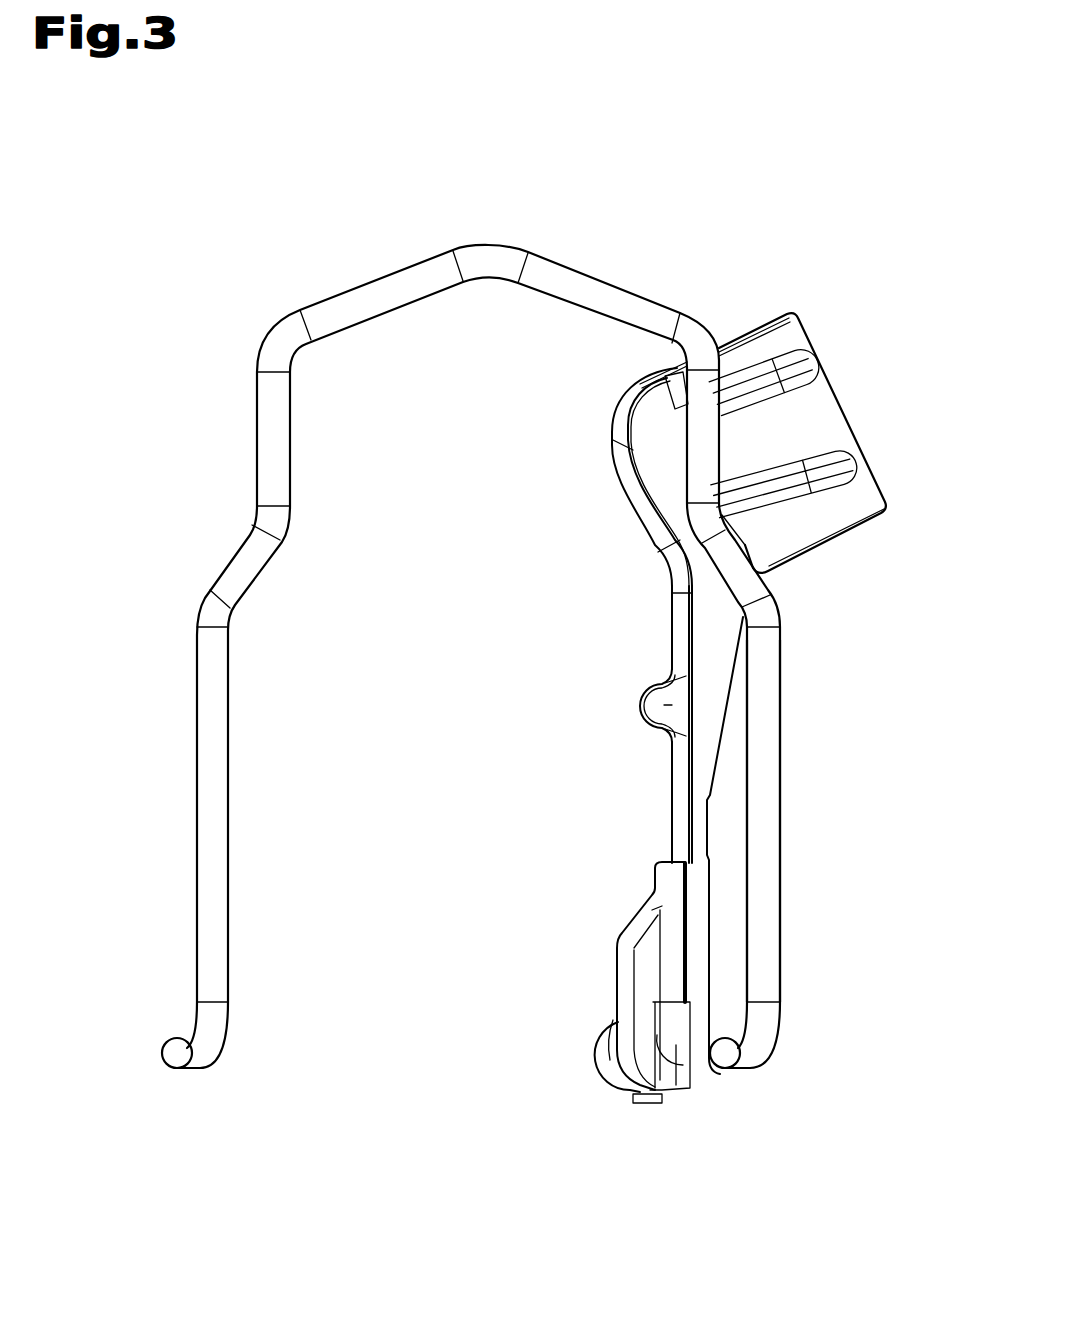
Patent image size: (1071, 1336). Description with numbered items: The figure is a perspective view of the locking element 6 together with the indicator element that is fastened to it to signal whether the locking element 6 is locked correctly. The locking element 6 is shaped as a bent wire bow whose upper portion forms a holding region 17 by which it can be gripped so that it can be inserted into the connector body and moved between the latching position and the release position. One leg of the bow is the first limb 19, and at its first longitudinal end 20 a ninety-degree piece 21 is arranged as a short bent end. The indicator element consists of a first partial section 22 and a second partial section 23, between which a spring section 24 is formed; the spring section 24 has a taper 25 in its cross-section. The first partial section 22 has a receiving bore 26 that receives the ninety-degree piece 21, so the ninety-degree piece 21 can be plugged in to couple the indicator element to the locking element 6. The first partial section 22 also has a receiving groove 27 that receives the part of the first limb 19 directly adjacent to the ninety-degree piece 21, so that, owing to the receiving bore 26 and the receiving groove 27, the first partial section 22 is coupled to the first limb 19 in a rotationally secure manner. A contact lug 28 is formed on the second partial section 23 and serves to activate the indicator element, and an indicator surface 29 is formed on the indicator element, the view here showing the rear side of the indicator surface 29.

The locking element 6 is at (636, 256).
The holding region 17 is at (489, 260).
The first limb 19 is at (795, 938).
The first longitudinal end 20 is at (795, 1067).
The 90° piece 21 is at (728, 1062).
The first partial section 22 is at (605, 927).
The second partial section 23 is at (633, 573).
The spring section 24 is at (652, 832).
The taper 25 is at (724, 812).
The receiving bore 26 is at (660, 1055).
The receiving groove 27 is at (675, 968).
The contact lug 28 is at (665, 706).
The indicator surface 29 is at (772, 302).